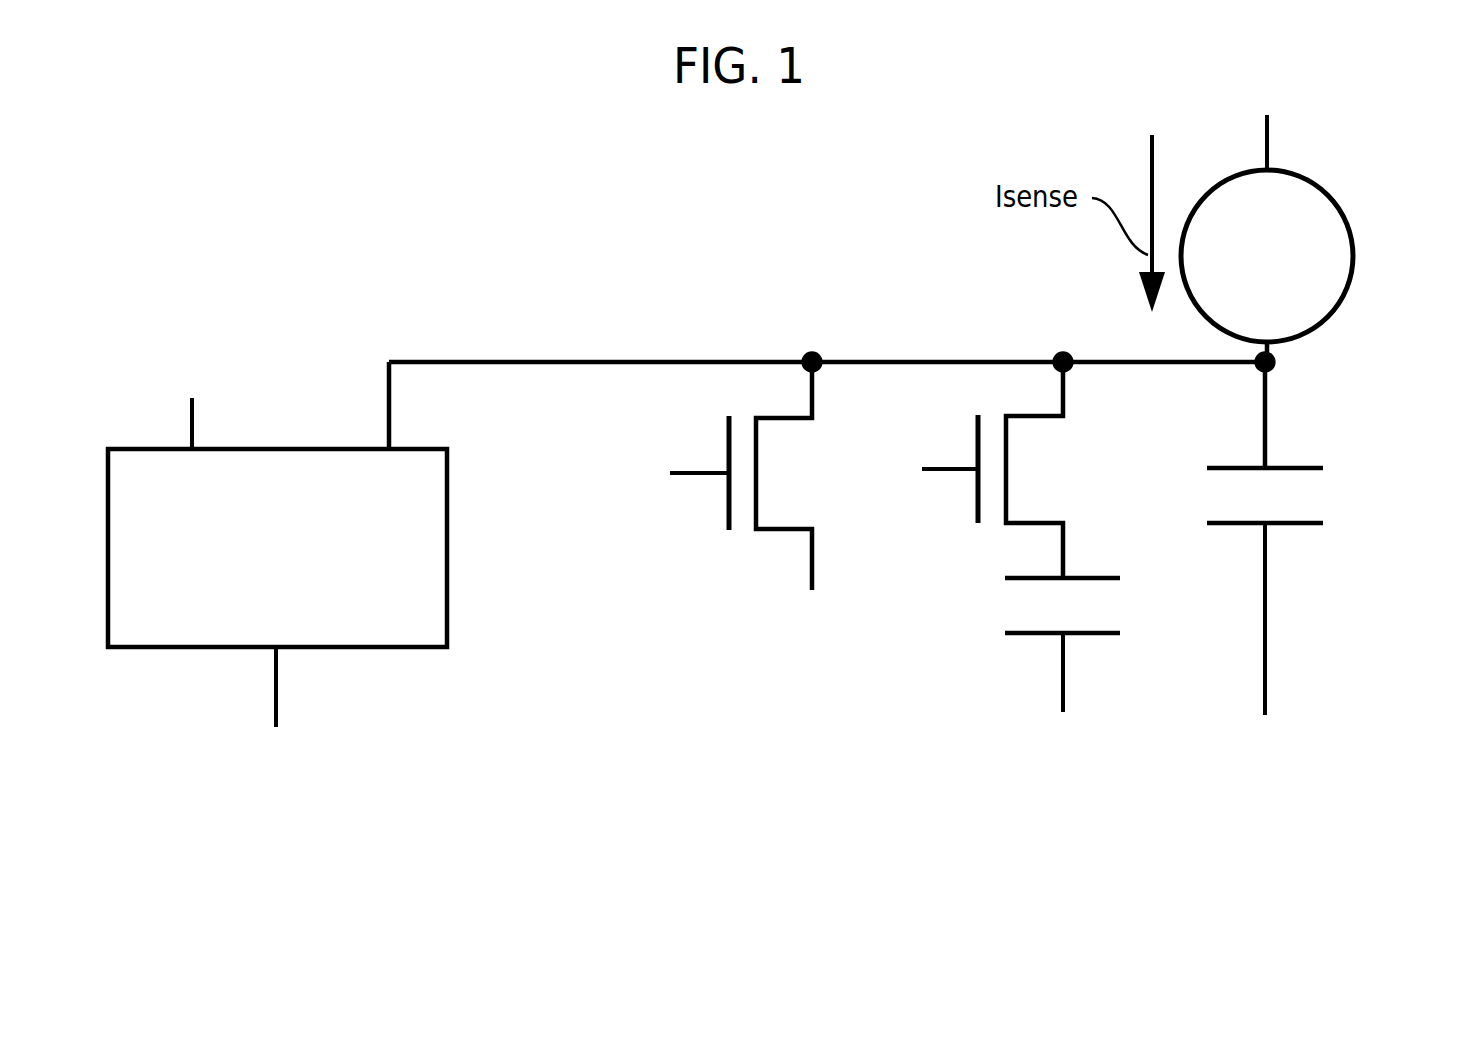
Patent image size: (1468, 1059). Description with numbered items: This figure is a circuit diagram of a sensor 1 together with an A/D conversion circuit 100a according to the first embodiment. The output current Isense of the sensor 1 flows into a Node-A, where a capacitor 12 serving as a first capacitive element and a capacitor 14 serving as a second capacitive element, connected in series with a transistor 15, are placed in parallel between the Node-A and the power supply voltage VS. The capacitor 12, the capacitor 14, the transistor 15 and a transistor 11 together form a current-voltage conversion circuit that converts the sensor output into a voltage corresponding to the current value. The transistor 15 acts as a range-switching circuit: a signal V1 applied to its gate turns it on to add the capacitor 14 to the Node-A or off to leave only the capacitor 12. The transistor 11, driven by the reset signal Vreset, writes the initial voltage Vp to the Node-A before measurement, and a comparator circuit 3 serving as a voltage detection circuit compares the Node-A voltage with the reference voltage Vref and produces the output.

The A/D conversion circuit 100a is at (540, 268).
The sensor 1 is at (1352, 228).
The comparator circuit 3 is at (447, 597).
The transistor 11 is at (782, 476).
The capacitor 12 is at (1324, 494).
The capacitor 14 is at (1001, 609).
The transistor 15 is at (1027, 468).